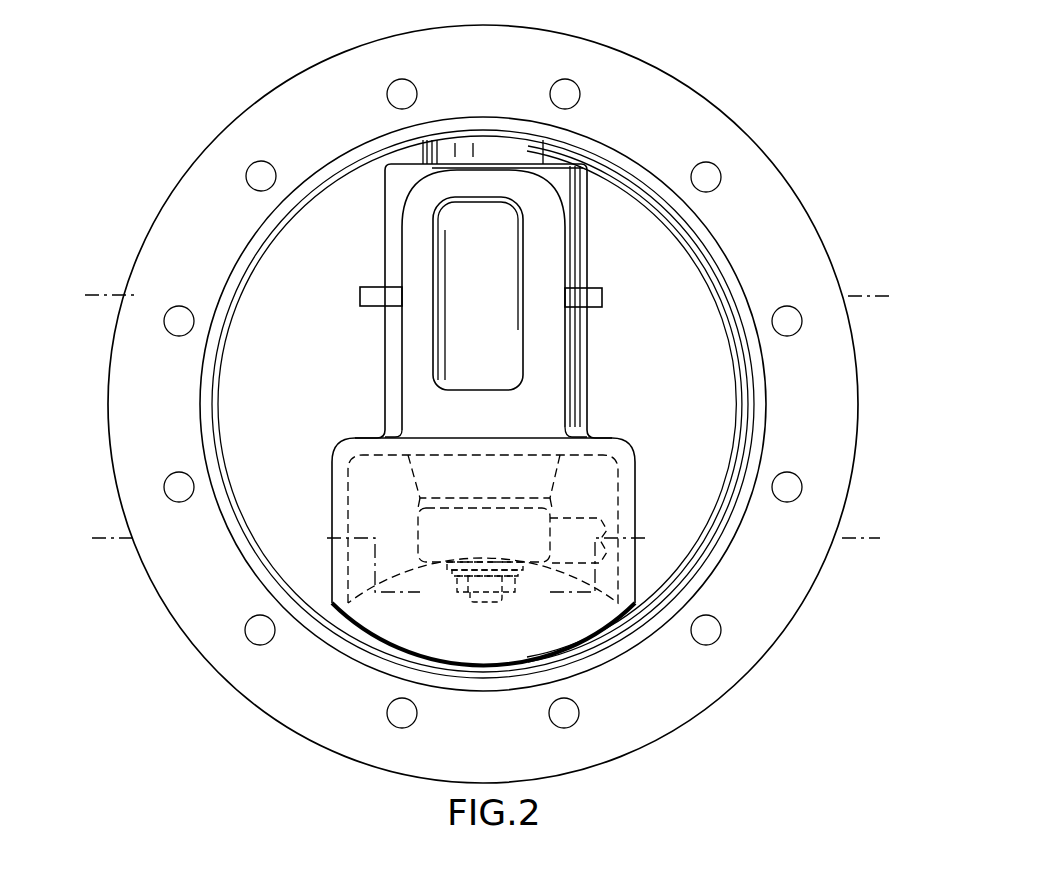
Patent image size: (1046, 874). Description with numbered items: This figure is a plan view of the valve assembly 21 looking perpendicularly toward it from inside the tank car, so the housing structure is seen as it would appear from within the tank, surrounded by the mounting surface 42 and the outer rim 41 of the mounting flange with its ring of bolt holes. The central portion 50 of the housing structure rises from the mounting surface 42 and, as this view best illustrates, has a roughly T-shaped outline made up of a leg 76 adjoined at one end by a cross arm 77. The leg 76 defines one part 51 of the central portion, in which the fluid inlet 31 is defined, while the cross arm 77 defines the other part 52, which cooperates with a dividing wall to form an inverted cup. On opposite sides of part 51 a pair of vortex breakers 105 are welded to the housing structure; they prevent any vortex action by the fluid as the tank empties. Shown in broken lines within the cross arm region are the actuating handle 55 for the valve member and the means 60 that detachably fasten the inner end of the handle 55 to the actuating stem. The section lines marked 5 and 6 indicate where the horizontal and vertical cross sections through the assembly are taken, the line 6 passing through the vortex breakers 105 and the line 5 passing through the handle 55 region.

The valve assembly 21 is at (784, 75).
The mounting surface 42 is at (775, 198).
The housing rim 41 is at (858, 373).
The central portion 50 is at (388, 388).
The part 51 is at (408, 320).
The leg 76 is at (594, 247).
The fluid inlet 31 is at (443, 235).
The vortex breakers 105 is at (360, 290).
The cross arm 77 is at (638, 450).
The part 52 is at (362, 494).
The actuating handle 55 is at (622, 510).
The means for detachably fastening 60 is at (446, 584).
The section line 6- 6 is at (68, 300).
The section line 5- 5 is at (75, 545).